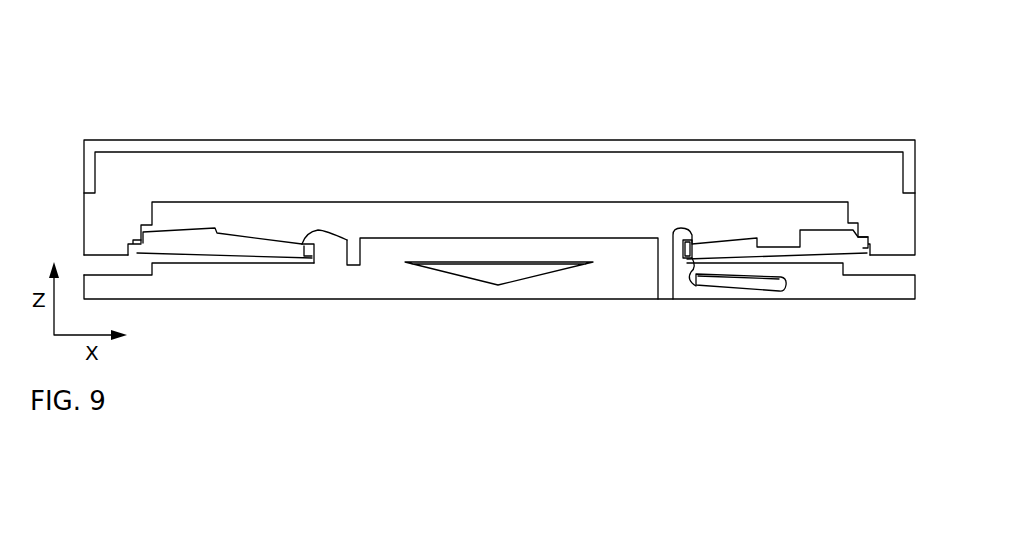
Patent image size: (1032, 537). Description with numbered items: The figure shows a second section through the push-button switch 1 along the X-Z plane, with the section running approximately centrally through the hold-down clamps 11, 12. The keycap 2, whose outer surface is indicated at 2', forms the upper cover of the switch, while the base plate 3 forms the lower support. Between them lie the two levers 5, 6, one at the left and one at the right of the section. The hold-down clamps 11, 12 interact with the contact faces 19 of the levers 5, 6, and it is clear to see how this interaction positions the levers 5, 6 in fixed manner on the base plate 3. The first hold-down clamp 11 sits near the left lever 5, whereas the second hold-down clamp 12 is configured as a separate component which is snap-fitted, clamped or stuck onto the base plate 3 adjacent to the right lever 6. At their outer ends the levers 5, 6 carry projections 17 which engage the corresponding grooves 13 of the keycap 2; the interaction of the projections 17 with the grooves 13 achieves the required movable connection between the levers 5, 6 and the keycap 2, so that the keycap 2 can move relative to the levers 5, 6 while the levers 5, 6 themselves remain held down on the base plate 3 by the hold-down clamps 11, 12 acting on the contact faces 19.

The push-button switch 1 is at (293, 106).
The keycap 2 is at (504, 158).
The outer surface of cover 2' is at (499, 155).
The base plate 3 is at (462, 300).
The lever 5 is at (261, 237).
The lever 6 is at (737, 238).
The hold-down clamp 11 is at (329, 236).
The second hold-down clamp 12 is at (673, 252).
The groove 13 is at (127, 242).
The projection 17 is at (137, 253).
The contact face 19 is at (302, 244).